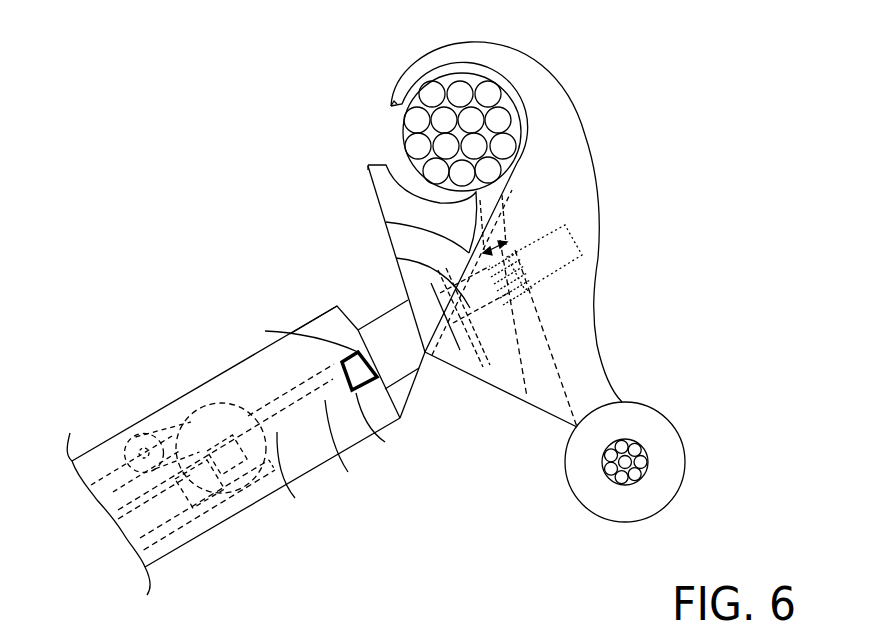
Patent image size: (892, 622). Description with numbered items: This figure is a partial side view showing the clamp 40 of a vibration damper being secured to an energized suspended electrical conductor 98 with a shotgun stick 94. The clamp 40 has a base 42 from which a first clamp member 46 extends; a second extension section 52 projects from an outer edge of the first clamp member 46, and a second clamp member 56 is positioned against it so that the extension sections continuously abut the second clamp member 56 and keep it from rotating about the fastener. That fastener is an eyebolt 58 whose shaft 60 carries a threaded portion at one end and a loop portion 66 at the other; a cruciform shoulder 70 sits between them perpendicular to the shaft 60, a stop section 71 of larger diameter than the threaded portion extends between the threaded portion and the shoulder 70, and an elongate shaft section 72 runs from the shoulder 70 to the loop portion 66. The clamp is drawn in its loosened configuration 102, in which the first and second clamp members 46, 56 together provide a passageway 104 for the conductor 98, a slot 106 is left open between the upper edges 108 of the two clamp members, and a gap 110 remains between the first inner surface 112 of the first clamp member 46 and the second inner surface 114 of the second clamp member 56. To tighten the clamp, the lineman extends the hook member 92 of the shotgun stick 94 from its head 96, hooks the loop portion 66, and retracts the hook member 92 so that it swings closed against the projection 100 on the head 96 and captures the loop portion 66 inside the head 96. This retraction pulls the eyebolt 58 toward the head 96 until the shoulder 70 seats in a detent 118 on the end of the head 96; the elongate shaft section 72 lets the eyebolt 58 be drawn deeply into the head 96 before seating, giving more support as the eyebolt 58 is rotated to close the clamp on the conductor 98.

The clamp 40 is at (790, 437).
The base 42 is at (593, 327).
The first clamp member 46 is at (575, 124).
The second extension section 52 is at (386, 222).
The second clamp member 56 is at (379, 204).
The eyebolt 58 is at (357, 326).
The shaft 60 is at (396, 258).
The loop portion 66 is at (295, 498).
The cruciform shoulder 70 is at (348, 352).
The stop section 71 is at (410, 380).
The elongate shaft section 72 is at (348, 472).
The hook member 92 is at (210, 410).
The shotgun stick 94 is at (175, 552).
The head 96 is at (227, 370).
The energized suspended electrical conductor 98 is at (403, 135).
The projection 100 is at (222, 500).
The loosened configuration 102 is at (218, 140).
The passageway 104 is at (508, 76).
The slot 106 is at (305, 110).
The upper edges 108 is at (395, 100).
The gap 110 is at (500, 242).
The first inner surface 112 is at (524, 333).
The second inner surface 114 is at (520, 376).
The detent 118 is at (385, 442).